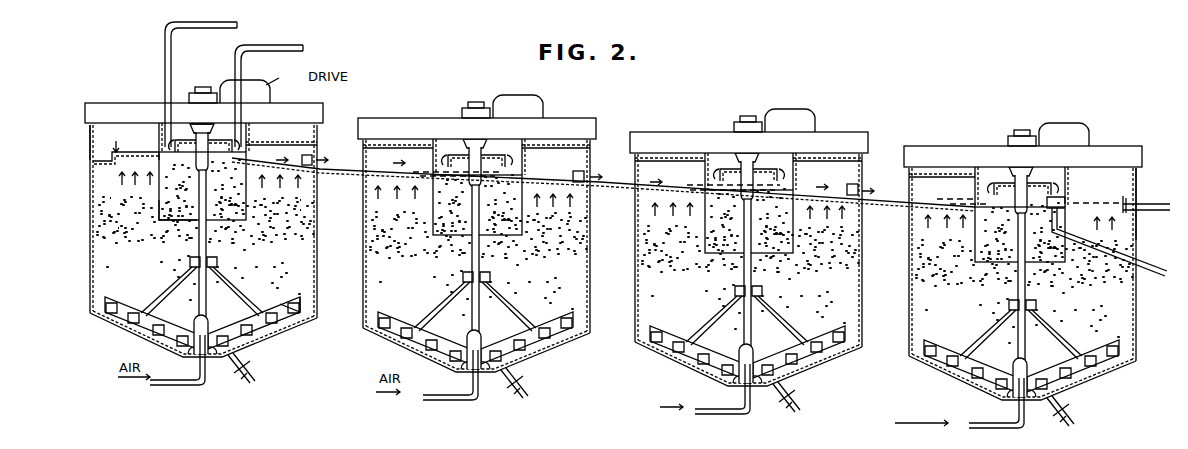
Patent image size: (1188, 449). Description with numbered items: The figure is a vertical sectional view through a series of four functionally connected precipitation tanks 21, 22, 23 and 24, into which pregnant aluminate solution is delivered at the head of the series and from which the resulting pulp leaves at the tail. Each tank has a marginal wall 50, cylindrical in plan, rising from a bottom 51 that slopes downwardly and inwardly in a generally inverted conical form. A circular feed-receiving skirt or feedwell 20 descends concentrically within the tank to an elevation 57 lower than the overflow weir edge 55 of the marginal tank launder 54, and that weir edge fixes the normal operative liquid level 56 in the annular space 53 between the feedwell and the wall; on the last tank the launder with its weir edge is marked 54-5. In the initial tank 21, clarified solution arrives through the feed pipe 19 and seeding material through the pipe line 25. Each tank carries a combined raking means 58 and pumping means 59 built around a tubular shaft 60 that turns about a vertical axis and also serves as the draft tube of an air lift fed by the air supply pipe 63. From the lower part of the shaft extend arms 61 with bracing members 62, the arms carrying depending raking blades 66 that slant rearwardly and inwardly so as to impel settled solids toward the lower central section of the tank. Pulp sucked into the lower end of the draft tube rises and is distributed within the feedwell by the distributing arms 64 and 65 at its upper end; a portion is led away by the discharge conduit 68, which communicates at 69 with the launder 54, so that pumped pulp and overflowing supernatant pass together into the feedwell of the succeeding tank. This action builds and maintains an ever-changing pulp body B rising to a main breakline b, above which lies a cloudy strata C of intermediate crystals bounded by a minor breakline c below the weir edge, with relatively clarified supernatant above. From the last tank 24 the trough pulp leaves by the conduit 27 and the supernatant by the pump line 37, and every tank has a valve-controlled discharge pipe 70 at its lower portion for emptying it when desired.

The feed pipe 19 is at (215, 26).
The feedwell 20 is at (148, 196).
The initial tank 21 is at (205, 230).
The tank 22 is at (478, 245).
The tank 23 is at (750, 259).
The tank 24 is at (1024, 273).
The pipe line 25 is at (262, 46).
The pipe line 27 is at (1143, 273).
The pump line 37 is at (1147, 204).
The marginal wall 50 is at (878, 276).
The bottom 51 is at (276, 334).
The annular space 53 is at (597, 183).
The marginal tank launder 54 is at (91, 148).
The outlet wall 54-5 is at (1137, 230).
The overflow weir edge 55 is at (1118, 190).
The normal operative liquid level 56 is at (158, 158).
The lower elevation of feedwell 57 is at (192, 220).
The sediment-raking or impelling means 58 is at (248, 298).
The lifting or pumping means 59 is at (211, 239).
The tubular shaft 60 is at (208, 290).
The arms 61 is at (285, 307).
The bracing members 62 is at (233, 262).
The air supply pipe 63 is at (187, 381).
The distributing arm 64 is at (194, 116).
The distributing arm 65 is at (210, 121).
The raking blades 66 is at (296, 312).
The discharge conduit 68 is at (253, 149).
The liquid communication 69 is at (309, 156).
The valve-controlled discharge pipe 70 is at (250, 369).
The main breakline b is at (110, 199).
The ever-changing pulp body B is at (112, 228).
The minor breakline c is at (300, 200).
The cloudy strata C is at (300, 210).